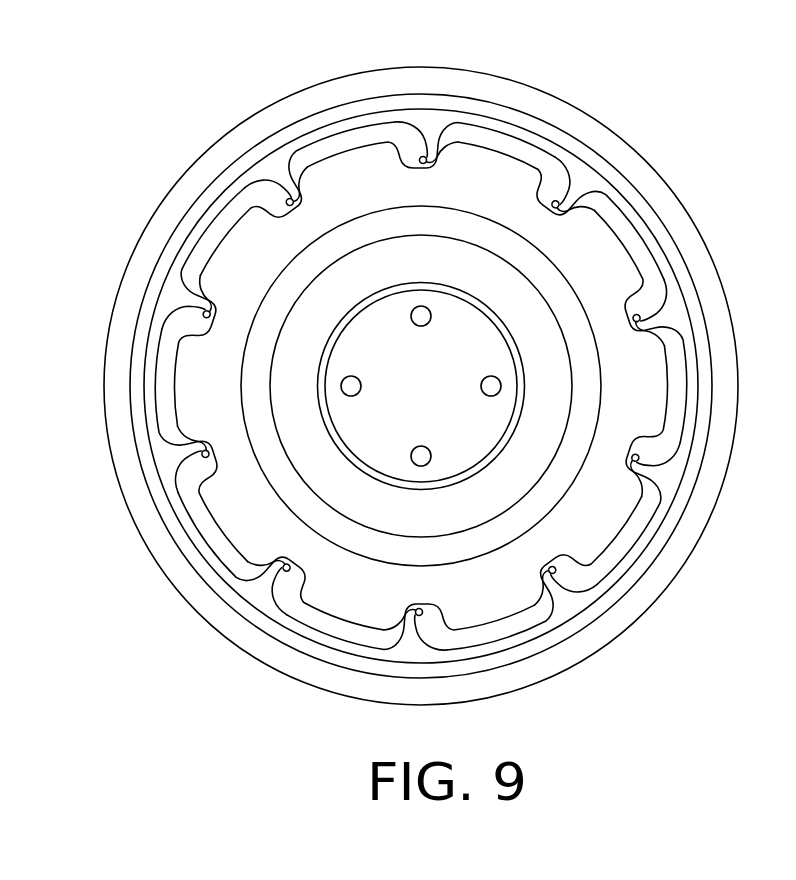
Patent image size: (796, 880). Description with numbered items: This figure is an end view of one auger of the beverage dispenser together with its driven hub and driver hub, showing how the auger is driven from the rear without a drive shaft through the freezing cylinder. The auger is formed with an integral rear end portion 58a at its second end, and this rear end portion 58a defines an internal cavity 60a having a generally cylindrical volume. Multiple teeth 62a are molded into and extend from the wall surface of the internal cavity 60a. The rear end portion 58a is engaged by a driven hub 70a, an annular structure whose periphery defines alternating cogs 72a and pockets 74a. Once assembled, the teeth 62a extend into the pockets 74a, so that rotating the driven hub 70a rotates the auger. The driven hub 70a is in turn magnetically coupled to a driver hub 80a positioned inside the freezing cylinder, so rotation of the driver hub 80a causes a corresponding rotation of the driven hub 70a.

The rear end portion 58a is at (541, 108).
The internal cavity 60a is at (184, 327).
The teeth 62a is at (420, 158).
The driven hub 70a is at (430, 367).
The cogs 72a is at (653, 380).
The pockets 74a is at (652, 458).
The driver hub 80a is at (383, 520).